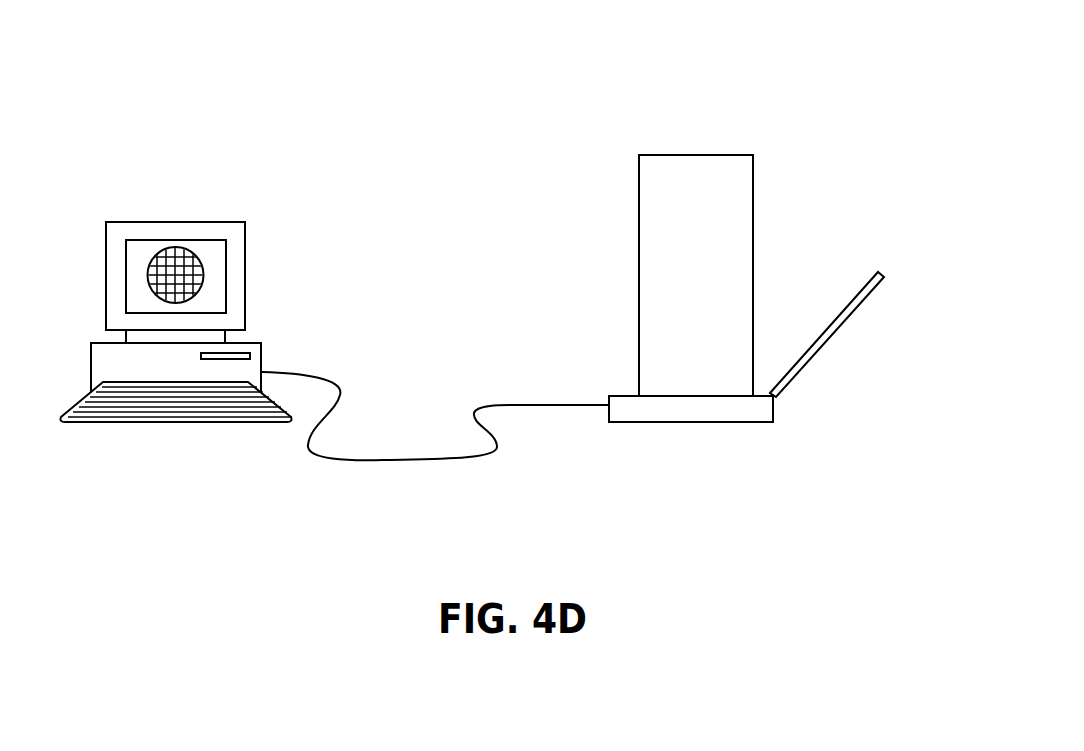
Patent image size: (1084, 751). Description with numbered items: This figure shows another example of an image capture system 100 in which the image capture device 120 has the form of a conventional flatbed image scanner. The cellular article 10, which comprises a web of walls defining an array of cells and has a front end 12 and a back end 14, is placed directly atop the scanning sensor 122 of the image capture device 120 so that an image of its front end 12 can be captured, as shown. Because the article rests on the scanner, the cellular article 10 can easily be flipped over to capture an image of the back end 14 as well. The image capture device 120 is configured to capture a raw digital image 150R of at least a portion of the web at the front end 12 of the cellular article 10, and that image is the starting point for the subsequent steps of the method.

The image capture system 100 is at (709, 220).
The cellular article 10 is at (639, 145).
The back end 14 is at (738, 155).
The front end 12 is at (650, 397).
The image capture device 120 is at (127, 208).
The image sensor 122 is at (240, 250).
The raw digital image 150R is at (192, 250).